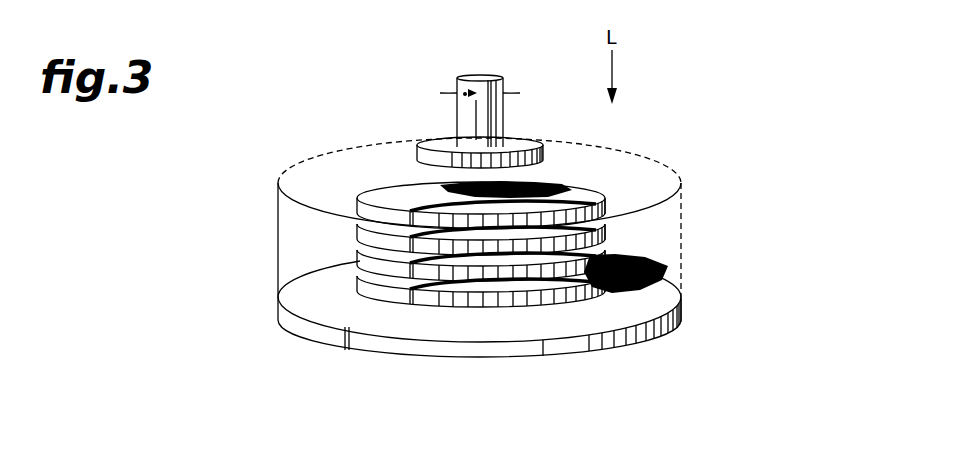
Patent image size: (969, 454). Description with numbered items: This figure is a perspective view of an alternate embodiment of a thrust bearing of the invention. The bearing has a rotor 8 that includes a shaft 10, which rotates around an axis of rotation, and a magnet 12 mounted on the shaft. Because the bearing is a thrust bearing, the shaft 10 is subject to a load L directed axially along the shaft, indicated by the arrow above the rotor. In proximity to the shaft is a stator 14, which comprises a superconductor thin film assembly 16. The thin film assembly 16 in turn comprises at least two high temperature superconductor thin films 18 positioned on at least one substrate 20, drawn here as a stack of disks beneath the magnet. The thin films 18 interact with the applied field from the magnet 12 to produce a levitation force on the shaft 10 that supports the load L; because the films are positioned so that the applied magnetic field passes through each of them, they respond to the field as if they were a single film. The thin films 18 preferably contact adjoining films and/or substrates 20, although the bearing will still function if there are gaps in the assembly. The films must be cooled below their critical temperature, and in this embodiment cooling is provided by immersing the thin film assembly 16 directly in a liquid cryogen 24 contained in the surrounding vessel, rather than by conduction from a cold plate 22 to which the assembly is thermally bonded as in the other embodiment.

The rotor 8 is at (268, 82).
The shaft 10 is at (466, 117).
The magnet 12 is at (533, 144).
The stator 14 is at (268, 182).
The superconductor thin film assembly 16 is at (596, 190).
The high temperature superconductor thin film 18 is at (398, 200).
The substrate 20 is at (366, 259).
The cold plate 22 is at (583, 348).
The liquid cryogen 24 is at (672, 186).